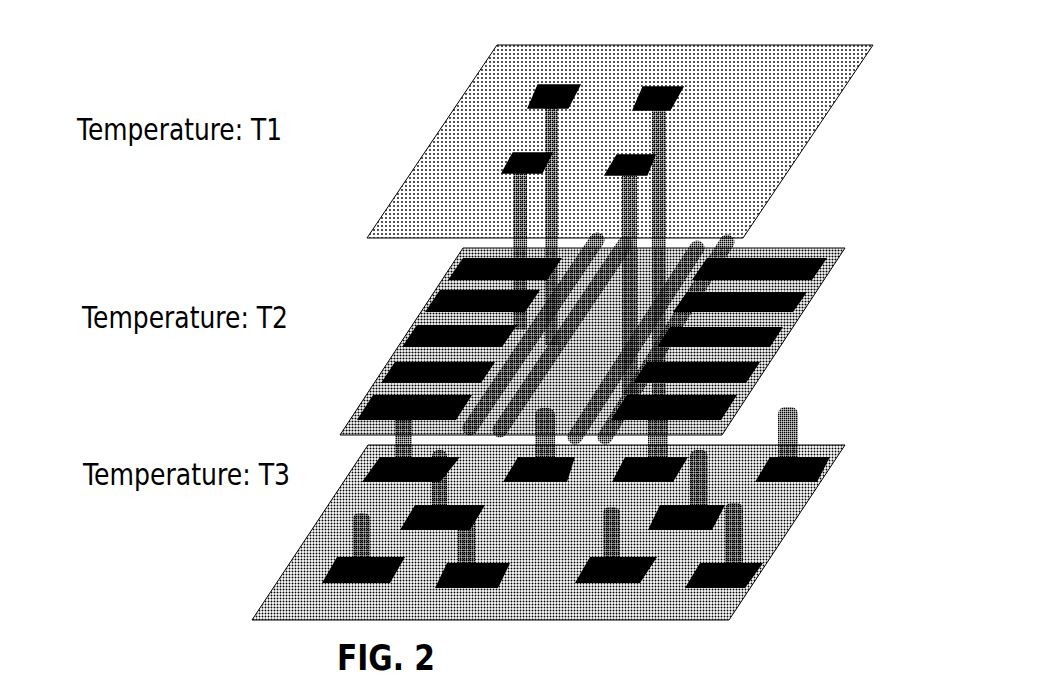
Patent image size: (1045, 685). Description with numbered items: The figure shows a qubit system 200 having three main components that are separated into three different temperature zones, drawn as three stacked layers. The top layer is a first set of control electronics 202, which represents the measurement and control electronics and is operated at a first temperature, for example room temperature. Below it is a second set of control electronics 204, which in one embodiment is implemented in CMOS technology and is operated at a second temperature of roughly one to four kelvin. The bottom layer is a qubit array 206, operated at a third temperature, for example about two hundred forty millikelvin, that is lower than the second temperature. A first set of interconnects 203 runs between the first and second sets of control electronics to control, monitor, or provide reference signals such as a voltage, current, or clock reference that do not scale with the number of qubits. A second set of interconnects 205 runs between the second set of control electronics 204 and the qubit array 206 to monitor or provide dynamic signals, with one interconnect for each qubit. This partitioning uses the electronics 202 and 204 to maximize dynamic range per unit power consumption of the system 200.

The qubit system 200 is at (70, 45).
The first set of control electronics 202 is at (860, 137).
The first set of interconnects 203 is at (681, 217).
The second set of control electronics 204 is at (858, 349).
The second set of interconnects 205 is at (810, 430).
The qubit array 206 is at (594, 513).